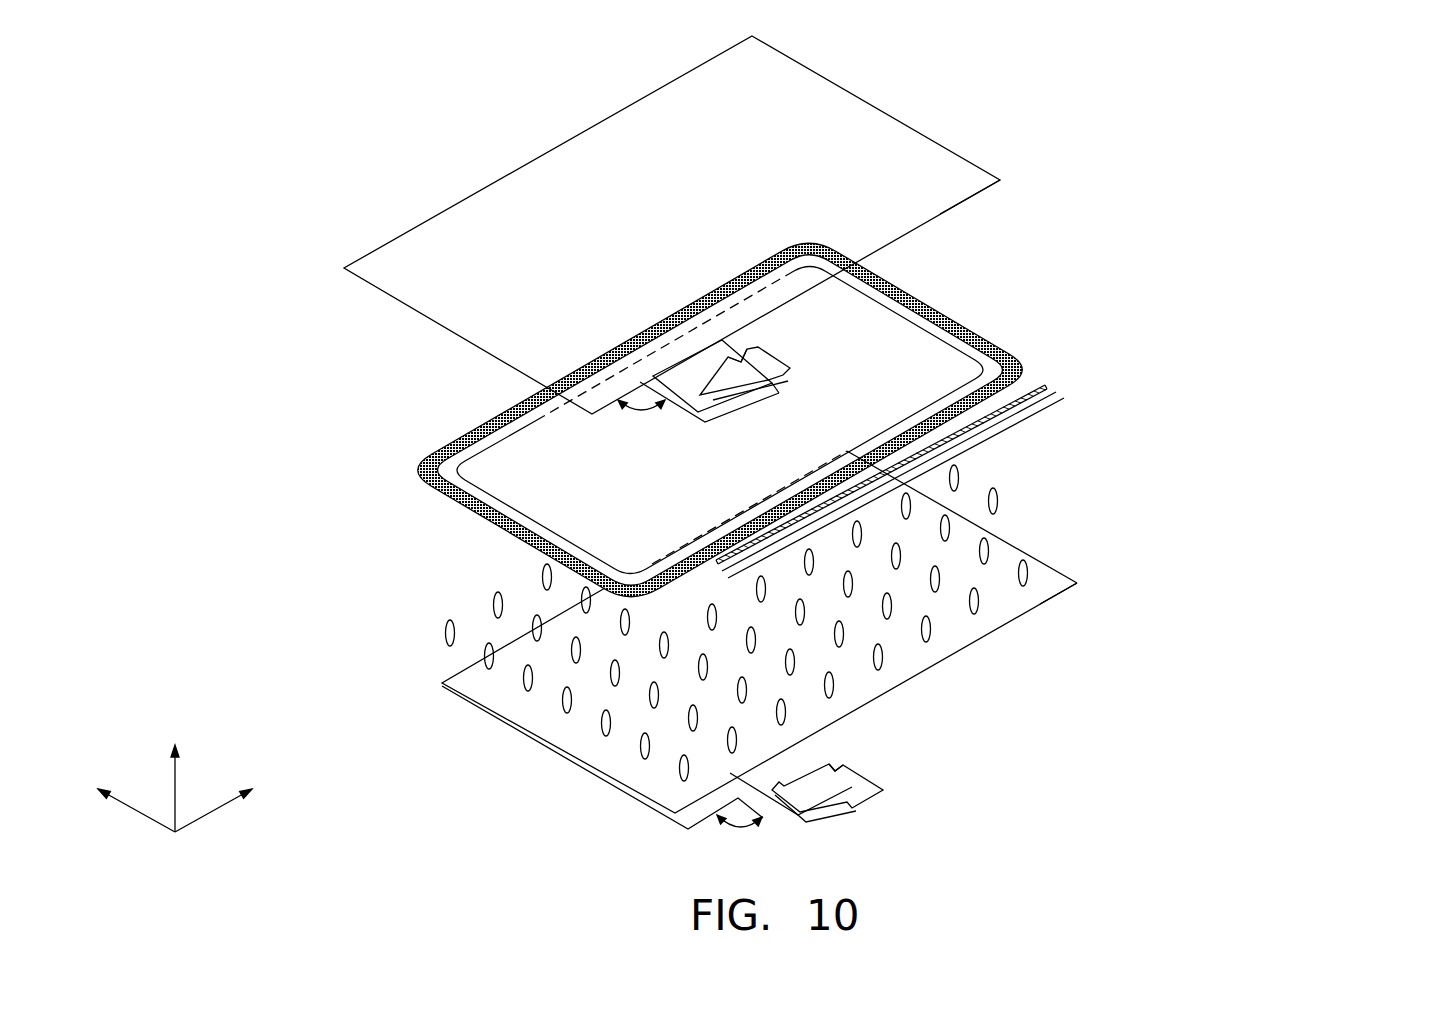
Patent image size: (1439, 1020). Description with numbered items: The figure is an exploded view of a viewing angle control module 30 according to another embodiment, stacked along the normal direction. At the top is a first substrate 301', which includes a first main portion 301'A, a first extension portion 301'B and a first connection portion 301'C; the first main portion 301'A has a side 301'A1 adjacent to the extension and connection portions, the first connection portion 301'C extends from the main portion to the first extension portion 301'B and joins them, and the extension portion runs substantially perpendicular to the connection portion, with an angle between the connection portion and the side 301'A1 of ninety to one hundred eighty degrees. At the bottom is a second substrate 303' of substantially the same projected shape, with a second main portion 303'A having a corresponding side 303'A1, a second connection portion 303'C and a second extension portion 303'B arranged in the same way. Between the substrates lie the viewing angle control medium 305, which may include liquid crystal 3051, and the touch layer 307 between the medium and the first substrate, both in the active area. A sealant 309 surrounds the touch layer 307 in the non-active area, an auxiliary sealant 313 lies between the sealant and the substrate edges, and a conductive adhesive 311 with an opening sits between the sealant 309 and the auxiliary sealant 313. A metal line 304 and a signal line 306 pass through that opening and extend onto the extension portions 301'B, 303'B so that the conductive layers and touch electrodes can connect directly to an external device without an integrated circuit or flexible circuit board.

The viewing angle control module 30 is at (140, 60).
The first substrate 301' is at (829, 296).
The first main portion 301'A is at (615, 225).
The side of the first main portion 301'A1 is at (1046, 202).
The first extension portion 301'B is at (918, 317).
The first connection portion 301'C is at (536, 458).
The second substrate 303' is at (853, 504).
The second main portion 303'A is at (677, 706).
The side of the second main portion 303'A1 is at (1144, 610).
The second extension portion 303'B is at (919, 807).
The second connection portion 303'C is at (791, 829).
The metal line 304 is at (737, 393).
The viewing angle control medium 305 is at (1050, 544).
The liquid crystal 3051 is at (978, 605).
The signal line 306 is at (740, 585).
The touch layer 307 is at (913, 345).
The sealant 309 is at (1010, 353).
The conductive adhesive 311 is at (1050, 385).
The auxiliary sealant 313 is at (1058, 396).